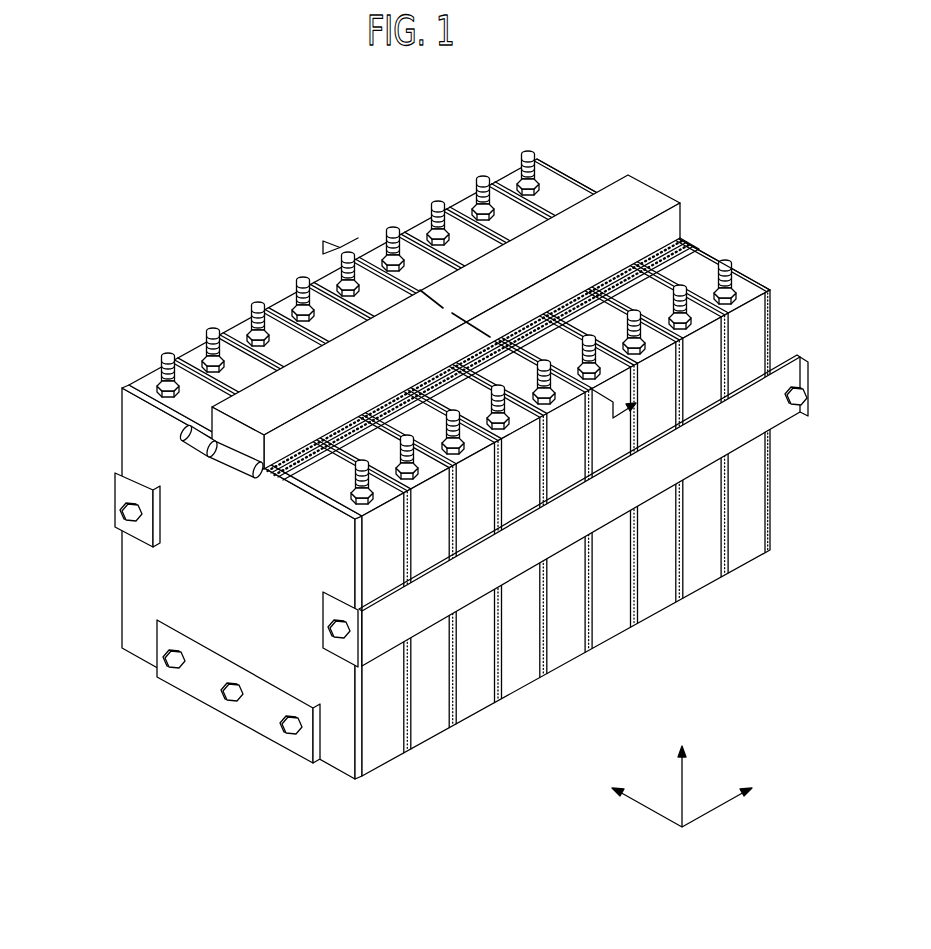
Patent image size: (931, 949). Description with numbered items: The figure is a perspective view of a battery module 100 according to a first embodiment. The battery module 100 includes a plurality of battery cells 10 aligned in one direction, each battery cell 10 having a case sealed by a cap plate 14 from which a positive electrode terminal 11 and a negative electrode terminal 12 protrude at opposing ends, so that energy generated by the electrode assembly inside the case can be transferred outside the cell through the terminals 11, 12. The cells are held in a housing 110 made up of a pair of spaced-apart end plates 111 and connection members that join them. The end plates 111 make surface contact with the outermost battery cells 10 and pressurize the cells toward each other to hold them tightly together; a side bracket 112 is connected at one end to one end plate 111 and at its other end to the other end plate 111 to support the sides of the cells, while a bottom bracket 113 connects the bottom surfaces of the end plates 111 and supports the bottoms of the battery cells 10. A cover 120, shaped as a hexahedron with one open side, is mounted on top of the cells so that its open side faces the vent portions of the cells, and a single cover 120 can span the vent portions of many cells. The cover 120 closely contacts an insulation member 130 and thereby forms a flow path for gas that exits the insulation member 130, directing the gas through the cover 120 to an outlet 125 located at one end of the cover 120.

The battery module 100 is at (248, 247).
The battery cell 10 is at (708, 554).
The positive electrode terminal 11 is at (532, 153).
The negative electrode terminal 12 is at (731, 258).
The cap plate 14 is at (746, 298).
The housing 110 is at (234, 806).
The end plate 111 is at (162, 583).
The side bracket 112 is at (320, 652).
The bottom bracket 113 is at (200, 678).
The cover 120 is at (642, 205).
The outlet 125 is at (182, 432).
The insulation member 130 is at (685, 237).